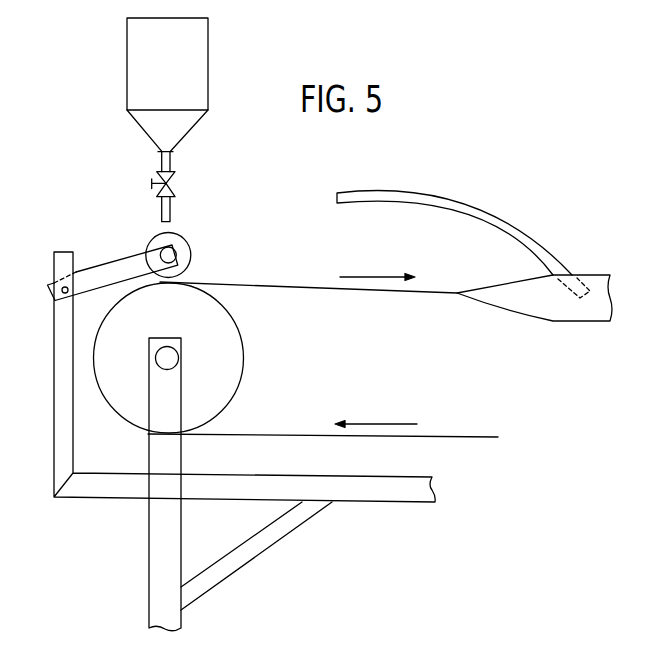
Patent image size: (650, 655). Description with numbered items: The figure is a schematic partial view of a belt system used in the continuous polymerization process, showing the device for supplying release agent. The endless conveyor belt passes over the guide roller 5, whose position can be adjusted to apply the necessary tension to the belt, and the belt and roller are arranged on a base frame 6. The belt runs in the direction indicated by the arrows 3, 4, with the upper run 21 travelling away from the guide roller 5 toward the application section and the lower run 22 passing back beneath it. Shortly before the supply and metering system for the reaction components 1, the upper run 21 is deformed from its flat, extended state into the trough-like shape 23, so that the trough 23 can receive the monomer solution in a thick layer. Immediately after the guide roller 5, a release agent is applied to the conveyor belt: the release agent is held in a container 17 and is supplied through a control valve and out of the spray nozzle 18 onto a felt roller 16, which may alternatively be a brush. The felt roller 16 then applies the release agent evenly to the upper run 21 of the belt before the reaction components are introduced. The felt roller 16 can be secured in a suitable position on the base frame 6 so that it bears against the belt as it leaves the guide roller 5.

The supply and metering system 1 is at (465, 210).
The arrow 3 is at (357, 277).
The arrow 4 is at (377, 424).
The guide roller 5 is at (102, 383).
The base frame 6 is at (58, 434).
The felt roller 16 is at (150, 241).
The container 17 is at (126, 90).
The spray nozzle 18 is at (160, 210).
The upper run 21 is at (370, 294).
The lower run 22 is at (468, 438).
The trough 23 is at (554, 308).